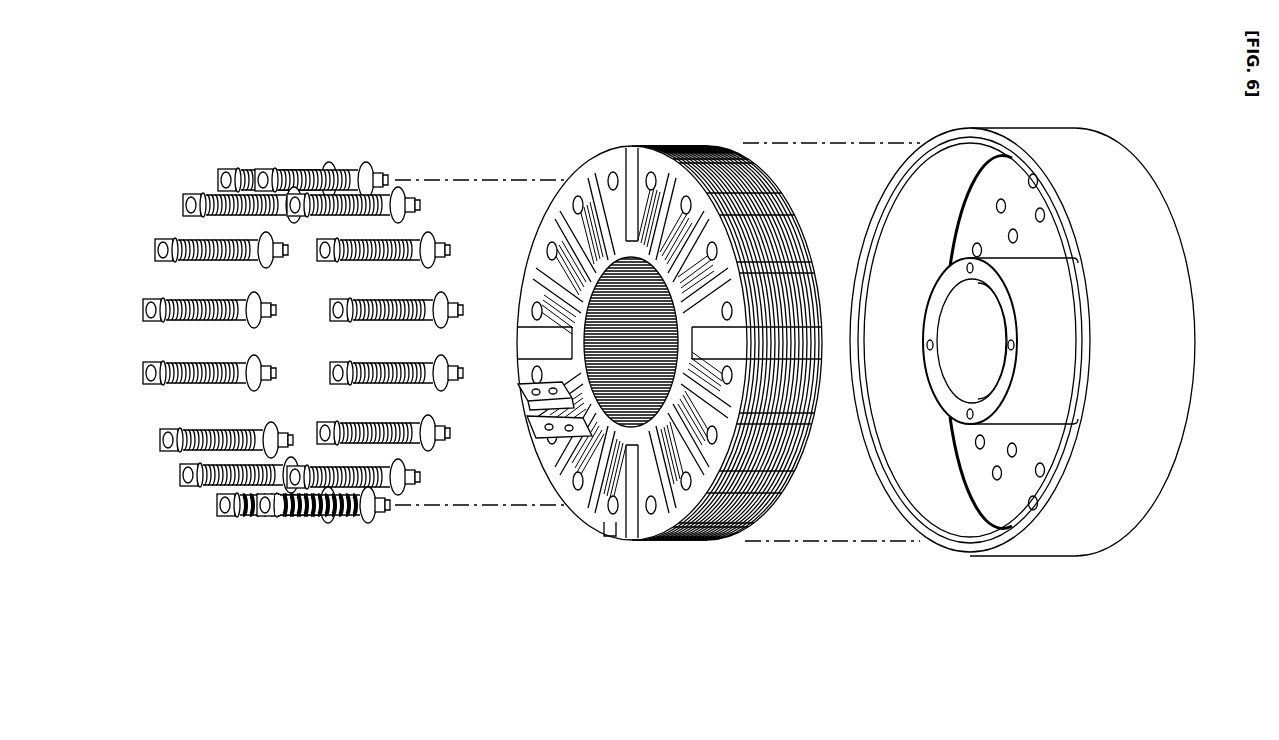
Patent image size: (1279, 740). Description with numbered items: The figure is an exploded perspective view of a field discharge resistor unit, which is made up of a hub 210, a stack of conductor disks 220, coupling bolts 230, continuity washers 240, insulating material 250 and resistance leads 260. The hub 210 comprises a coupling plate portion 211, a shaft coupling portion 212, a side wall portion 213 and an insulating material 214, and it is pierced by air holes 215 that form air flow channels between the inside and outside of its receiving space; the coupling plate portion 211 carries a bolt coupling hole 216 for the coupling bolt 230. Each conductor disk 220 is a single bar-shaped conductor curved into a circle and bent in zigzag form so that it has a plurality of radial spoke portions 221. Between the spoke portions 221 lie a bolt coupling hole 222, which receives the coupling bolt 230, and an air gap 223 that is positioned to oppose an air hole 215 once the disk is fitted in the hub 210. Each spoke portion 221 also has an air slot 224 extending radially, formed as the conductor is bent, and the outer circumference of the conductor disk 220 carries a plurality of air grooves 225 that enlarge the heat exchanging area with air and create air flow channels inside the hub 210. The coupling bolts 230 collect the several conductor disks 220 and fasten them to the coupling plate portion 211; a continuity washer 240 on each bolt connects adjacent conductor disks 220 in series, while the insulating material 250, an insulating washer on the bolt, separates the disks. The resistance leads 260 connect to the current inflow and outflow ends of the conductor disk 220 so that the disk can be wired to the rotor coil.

The hub 210 is at (1056, 554).
The coupling plate portion 211 is at (1003, 505).
The shaft coupling portion 212 is at (950, 410).
The side wall portion 213 is at (932, 540).
The insulating material 214 is at (923, 373).
The air holes 215 is at (1012, 458).
The bolt coupling hole 216 is at (993, 473).
The conductor disk 220 is at (668, 540).
The spoke portions 221 is at (603, 427).
The bolt coupling hole 222 is at (640, 503).
The air gap 223 is at (710, 545).
The air slot 224 is at (593, 490).
The air grooves 225 is at (610, 527).
The coupling bolt 230 is at (262, 517).
The continuity washer 240 is at (340, 517).
The insulating material 250 is at (307, 520).
The resistance lead 260 is at (547, 420).